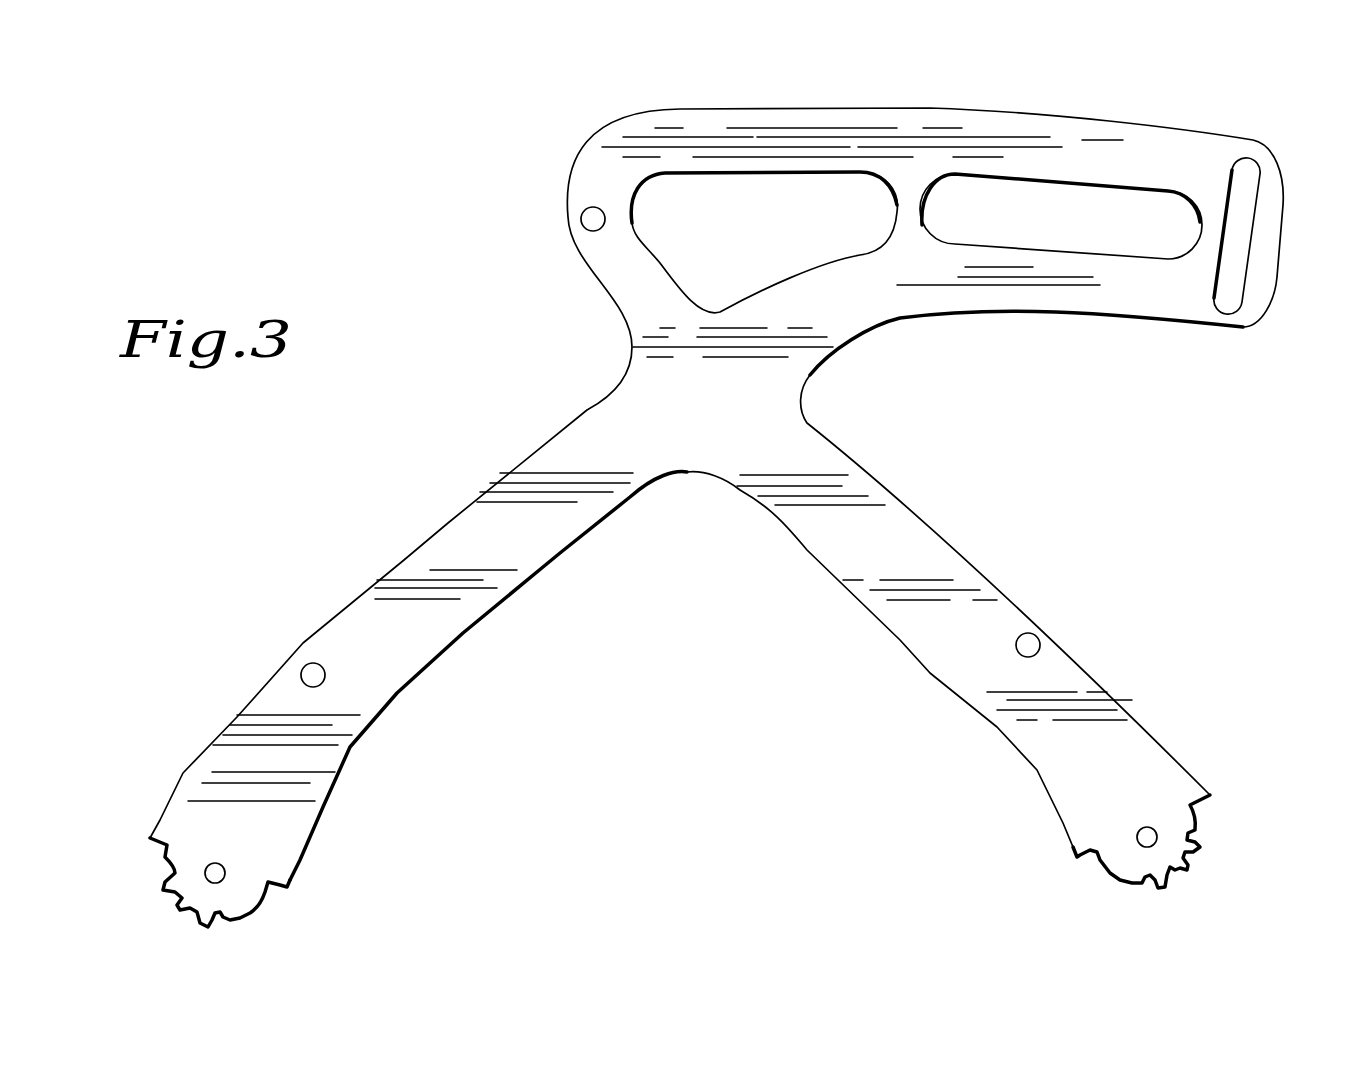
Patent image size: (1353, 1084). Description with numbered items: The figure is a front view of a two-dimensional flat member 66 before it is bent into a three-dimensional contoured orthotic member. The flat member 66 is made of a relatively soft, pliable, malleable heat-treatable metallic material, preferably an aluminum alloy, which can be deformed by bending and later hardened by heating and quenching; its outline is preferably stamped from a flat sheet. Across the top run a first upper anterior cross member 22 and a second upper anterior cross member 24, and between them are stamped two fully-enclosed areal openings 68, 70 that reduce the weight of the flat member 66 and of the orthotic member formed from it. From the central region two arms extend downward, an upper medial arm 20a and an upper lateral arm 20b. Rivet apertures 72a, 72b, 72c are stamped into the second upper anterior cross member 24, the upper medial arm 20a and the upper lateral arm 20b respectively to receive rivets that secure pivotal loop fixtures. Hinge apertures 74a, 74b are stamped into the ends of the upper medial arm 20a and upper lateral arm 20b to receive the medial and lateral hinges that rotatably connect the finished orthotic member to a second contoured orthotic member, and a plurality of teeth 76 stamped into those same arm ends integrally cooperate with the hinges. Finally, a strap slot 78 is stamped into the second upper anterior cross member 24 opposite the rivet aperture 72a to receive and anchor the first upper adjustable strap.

The flat member 66 is at (384, 306).
The second upper anterior cross member 24 is at (885, 130).
The areal opening 68 is at (752, 187).
The areal opening 70 is at (1060, 202).
The strap slot 78 is at (1230, 280).
The first upper anterior cross member 22 is at (723, 404).
The upper medial arm 20a is at (470, 528).
The upper lateral arm 20b is at (1132, 742).
The rivet aperture 72a is at (592, 222).
The rivet aperture 72b is at (312, 672).
The rivet aperture 72c is at (1030, 645).
The hinge aperture 74a is at (217, 872).
The hinge aperture 74b is at (1145, 837).
The teeth 76 is at (177, 910).